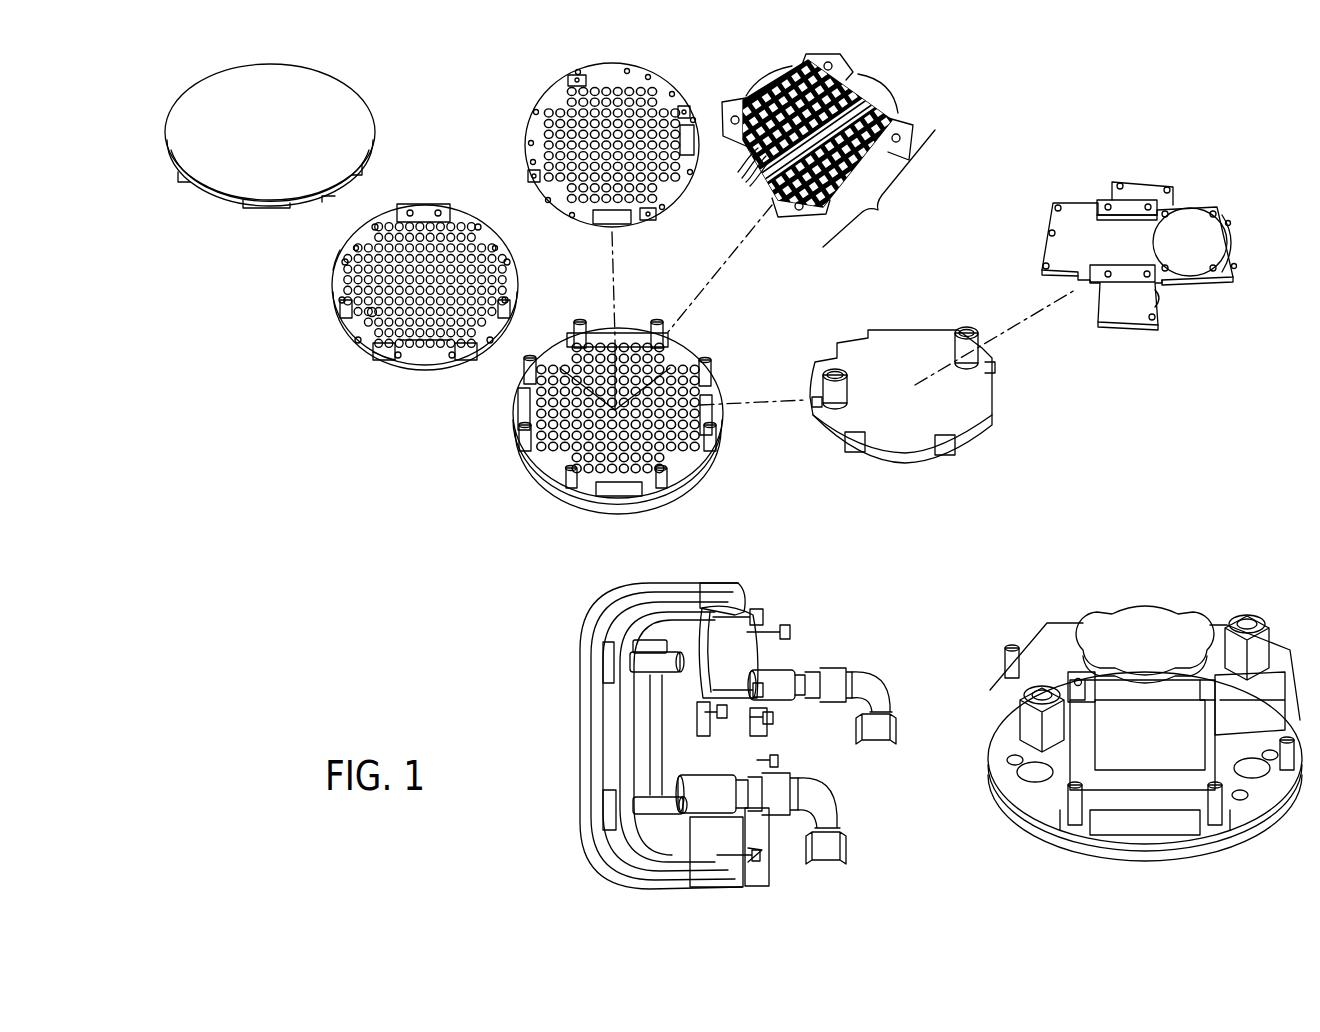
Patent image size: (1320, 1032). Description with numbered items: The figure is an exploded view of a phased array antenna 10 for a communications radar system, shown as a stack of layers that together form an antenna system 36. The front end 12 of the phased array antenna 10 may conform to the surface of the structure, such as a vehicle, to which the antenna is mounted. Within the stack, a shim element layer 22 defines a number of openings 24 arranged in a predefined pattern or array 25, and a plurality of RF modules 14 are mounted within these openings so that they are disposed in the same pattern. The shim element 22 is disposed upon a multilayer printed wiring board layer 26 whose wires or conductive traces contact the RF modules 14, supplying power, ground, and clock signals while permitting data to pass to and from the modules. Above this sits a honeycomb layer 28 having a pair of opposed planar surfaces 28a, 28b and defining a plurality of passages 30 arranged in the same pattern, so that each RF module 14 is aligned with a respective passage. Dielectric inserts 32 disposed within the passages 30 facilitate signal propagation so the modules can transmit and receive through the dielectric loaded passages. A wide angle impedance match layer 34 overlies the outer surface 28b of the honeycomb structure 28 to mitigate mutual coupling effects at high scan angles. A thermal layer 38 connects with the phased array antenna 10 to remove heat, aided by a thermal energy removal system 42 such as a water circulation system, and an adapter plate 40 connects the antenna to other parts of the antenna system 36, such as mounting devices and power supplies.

The phased array antenna 10 is at (535, 498).
The front end 12 is at (600, 815).
The RF module 14 is at (680, 450).
The shim element layer 22 is at (882, 88).
The openings 24 is at (736, 175).
The array 25 is at (879, 188).
The multilayer printed wiring board layer 26 is at (556, 90).
The honeycomb layer 28 is at (426, 200).
The planar surface 28a is at (386, 362).
The outer surface 28b is at (341, 279).
The passages 30 is at (370, 314).
The dielectric inserts 32 is at (426, 343).
The wide angle impedance match layer 34 is at (250, 118).
The antenna system 36 is at (742, 880).
The thermal layer 38 is at (925, 475).
The adapter plate 40 is at (1092, 162).
The thermal energy removal system 42 is at (897, 710).